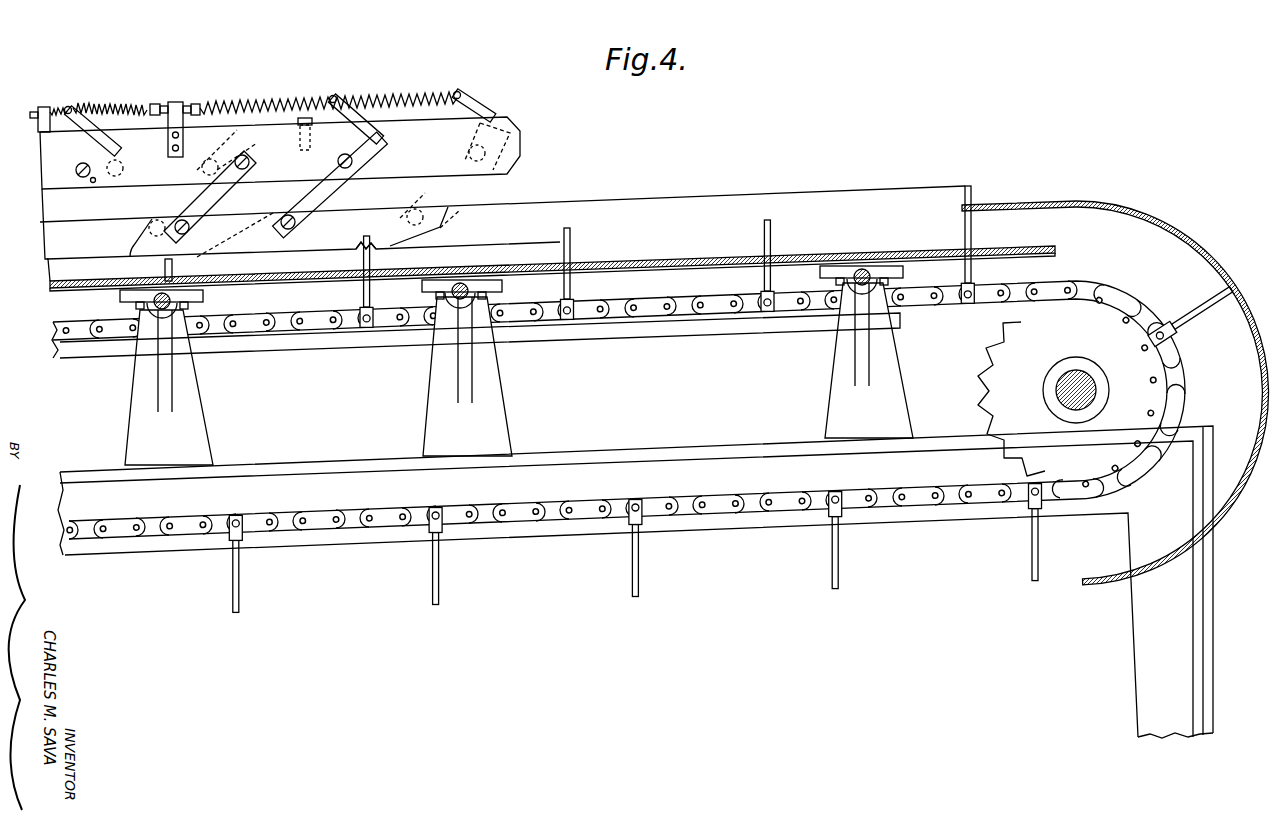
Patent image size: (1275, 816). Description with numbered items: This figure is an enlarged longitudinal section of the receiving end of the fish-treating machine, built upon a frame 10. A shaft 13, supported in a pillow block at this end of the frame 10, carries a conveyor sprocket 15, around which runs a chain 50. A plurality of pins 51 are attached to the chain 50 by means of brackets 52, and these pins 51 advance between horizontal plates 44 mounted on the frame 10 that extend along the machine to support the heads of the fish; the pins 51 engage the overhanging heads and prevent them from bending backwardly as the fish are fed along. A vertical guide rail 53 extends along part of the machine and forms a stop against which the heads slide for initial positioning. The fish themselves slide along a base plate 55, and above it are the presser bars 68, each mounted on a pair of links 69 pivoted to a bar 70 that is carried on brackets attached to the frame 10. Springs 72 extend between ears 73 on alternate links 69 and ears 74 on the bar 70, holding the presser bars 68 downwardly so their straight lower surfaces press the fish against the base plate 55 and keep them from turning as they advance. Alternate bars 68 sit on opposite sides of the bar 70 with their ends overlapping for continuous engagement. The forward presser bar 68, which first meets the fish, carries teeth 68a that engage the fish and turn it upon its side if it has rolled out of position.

The frame 10 is at (562, 532).
The shaft 13 is at (1074, 372).
The conveyor sprocket 15 is at (978, 358).
The horizontal plate 44 is at (698, 268).
The chain 50 is at (601, 322).
The pin 51 is at (573, 247).
The bracket 52 is at (575, 306).
The vertical guide rail 53 is at (791, 197).
The base plate 55 is at (659, 262).
The presser bar 68 is at (212, 246).
The teeth 68a is at (381, 252).
The link 69 is at (284, 193).
The bar 70 is at (515, 158).
The spring 72 is at (328, 91).
The ear 73 is at (86, 122).
The ear 74 is at (174, 102).